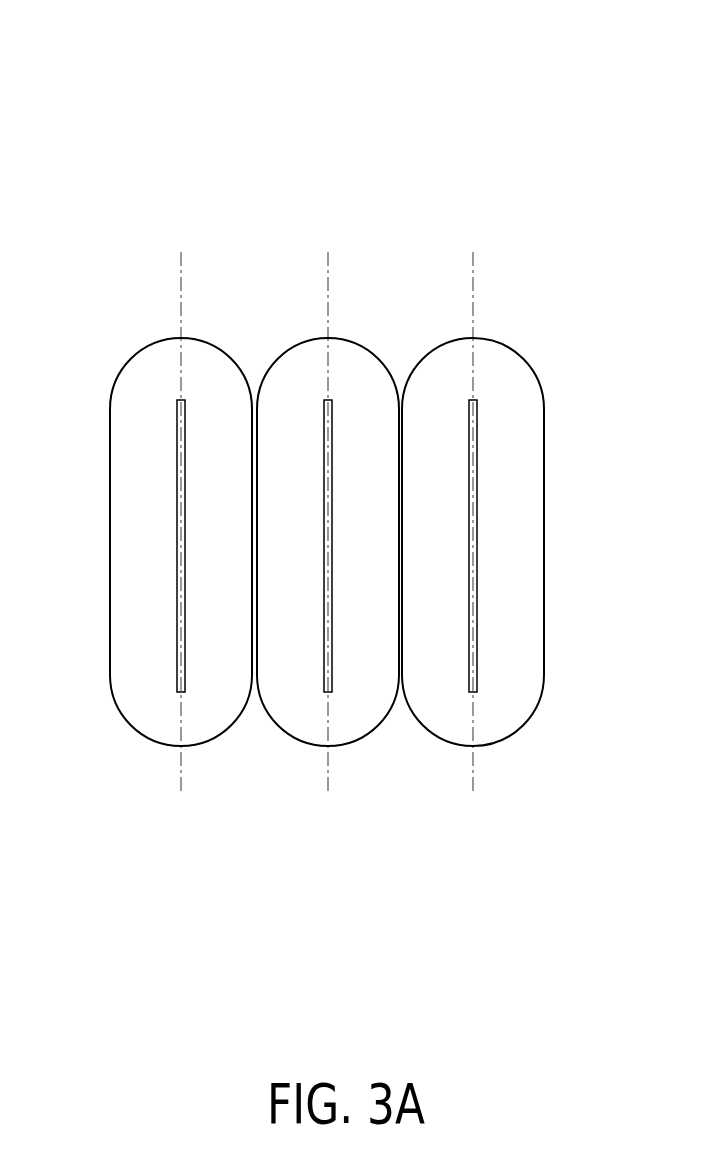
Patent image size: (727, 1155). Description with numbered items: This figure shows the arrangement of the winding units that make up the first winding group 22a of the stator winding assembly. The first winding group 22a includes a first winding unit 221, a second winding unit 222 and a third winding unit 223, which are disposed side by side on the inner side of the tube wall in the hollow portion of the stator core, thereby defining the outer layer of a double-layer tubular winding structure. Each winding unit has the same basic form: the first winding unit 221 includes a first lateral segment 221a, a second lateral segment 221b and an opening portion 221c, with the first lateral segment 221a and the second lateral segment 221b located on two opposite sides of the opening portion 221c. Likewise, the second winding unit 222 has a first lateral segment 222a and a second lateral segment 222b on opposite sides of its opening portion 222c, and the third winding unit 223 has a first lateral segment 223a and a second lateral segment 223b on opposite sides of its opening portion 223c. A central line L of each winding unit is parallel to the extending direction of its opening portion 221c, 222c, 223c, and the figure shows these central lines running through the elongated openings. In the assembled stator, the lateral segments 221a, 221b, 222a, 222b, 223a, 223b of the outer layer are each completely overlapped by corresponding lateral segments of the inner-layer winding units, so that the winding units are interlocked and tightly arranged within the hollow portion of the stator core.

The first winding group 22a is at (636, 43).
The first winding unit 221 is at (162, 355).
The first lateral segment 221a is at (147, 755).
The second lateral segment 221b is at (200, 755).
The opening portion 221c is at (146, 498).
The second winding unit 222 is at (353, 355).
The first lateral segment 222a is at (300, 755).
The second lateral segment 222b is at (363, 733).
The opening portion 222c is at (297, 395).
The third winding unit 223 is at (480, 355).
The first lateral segment 223a is at (448, 727).
The second lateral segment 223b is at (528, 718).
The opening portion 223c is at (503, 469).